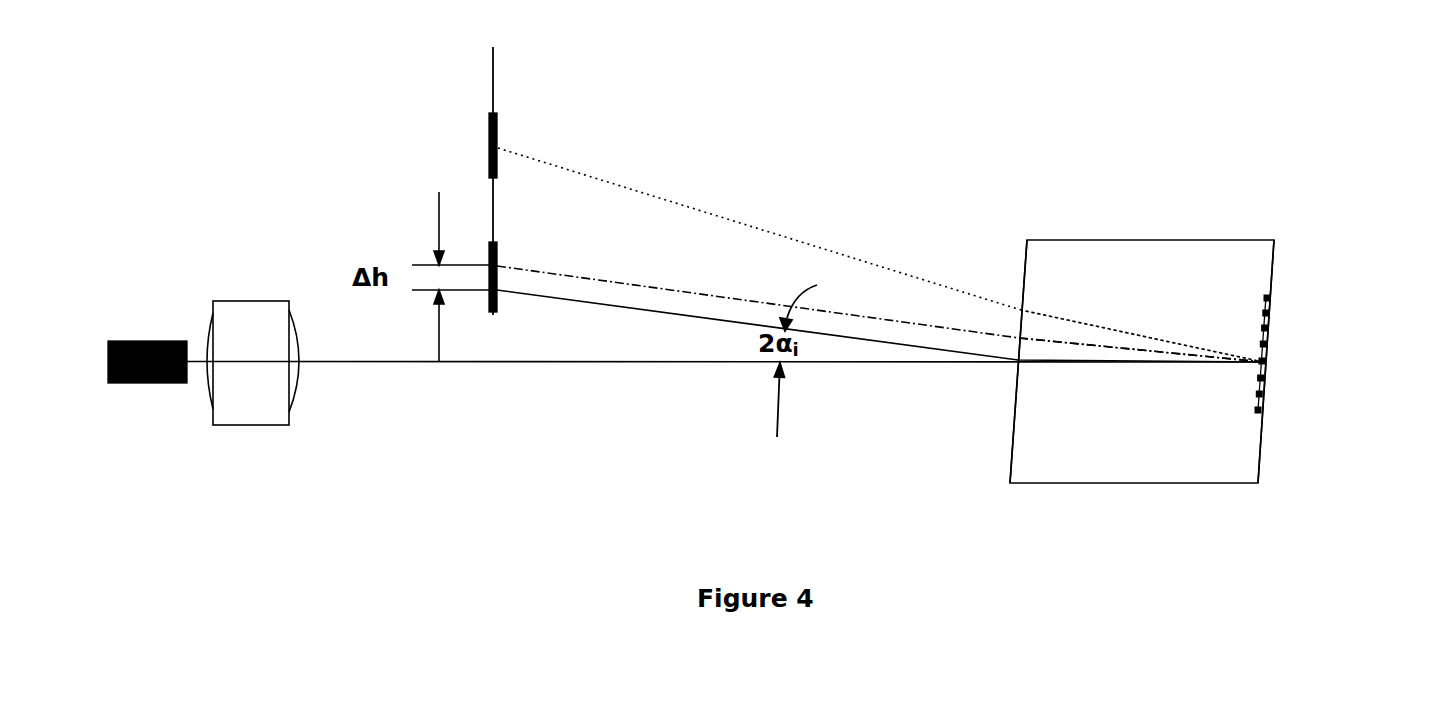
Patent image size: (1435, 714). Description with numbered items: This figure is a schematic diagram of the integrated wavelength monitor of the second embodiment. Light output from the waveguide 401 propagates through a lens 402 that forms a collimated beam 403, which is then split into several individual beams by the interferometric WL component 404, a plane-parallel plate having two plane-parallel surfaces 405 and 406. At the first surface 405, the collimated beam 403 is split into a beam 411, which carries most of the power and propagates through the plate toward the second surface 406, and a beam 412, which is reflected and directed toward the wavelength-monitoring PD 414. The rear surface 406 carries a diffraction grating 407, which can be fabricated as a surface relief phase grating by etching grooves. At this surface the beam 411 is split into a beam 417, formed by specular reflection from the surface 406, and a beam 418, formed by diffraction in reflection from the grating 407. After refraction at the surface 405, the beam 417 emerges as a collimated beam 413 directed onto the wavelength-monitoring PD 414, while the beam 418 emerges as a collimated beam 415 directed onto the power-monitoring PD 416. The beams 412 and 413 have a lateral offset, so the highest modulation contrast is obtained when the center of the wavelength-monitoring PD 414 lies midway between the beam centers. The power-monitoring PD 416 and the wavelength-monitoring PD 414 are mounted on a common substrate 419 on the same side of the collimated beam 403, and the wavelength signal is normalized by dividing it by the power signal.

The waveguide 401 is at (146, 404).
The lens 402 is at (253, 403).
The collimated beam 403 is at (725, 424).
The WL component 404 is at (1142, 337).
The first surface 405 is at (973, 361).
The second surface 406 is at (1301, 380).
The diffraction grating 407 is at (1290, 350).
The beam 411 is at (1201, 361).
The wavelength monitoring beam 412 is at (880, 326).
The collimated beam 413 is at (880, 301).
The wavelength-monitoring PD 414 is at (527, 261).
The power monitoring beam 415 is at (880, 255).
The power-monitoring PD 416 is at (527, 133).
The beam 417 is at (1097, 335).
The beam 418 is at (1166, 326).
The common substrate 419 is at (476, 78).